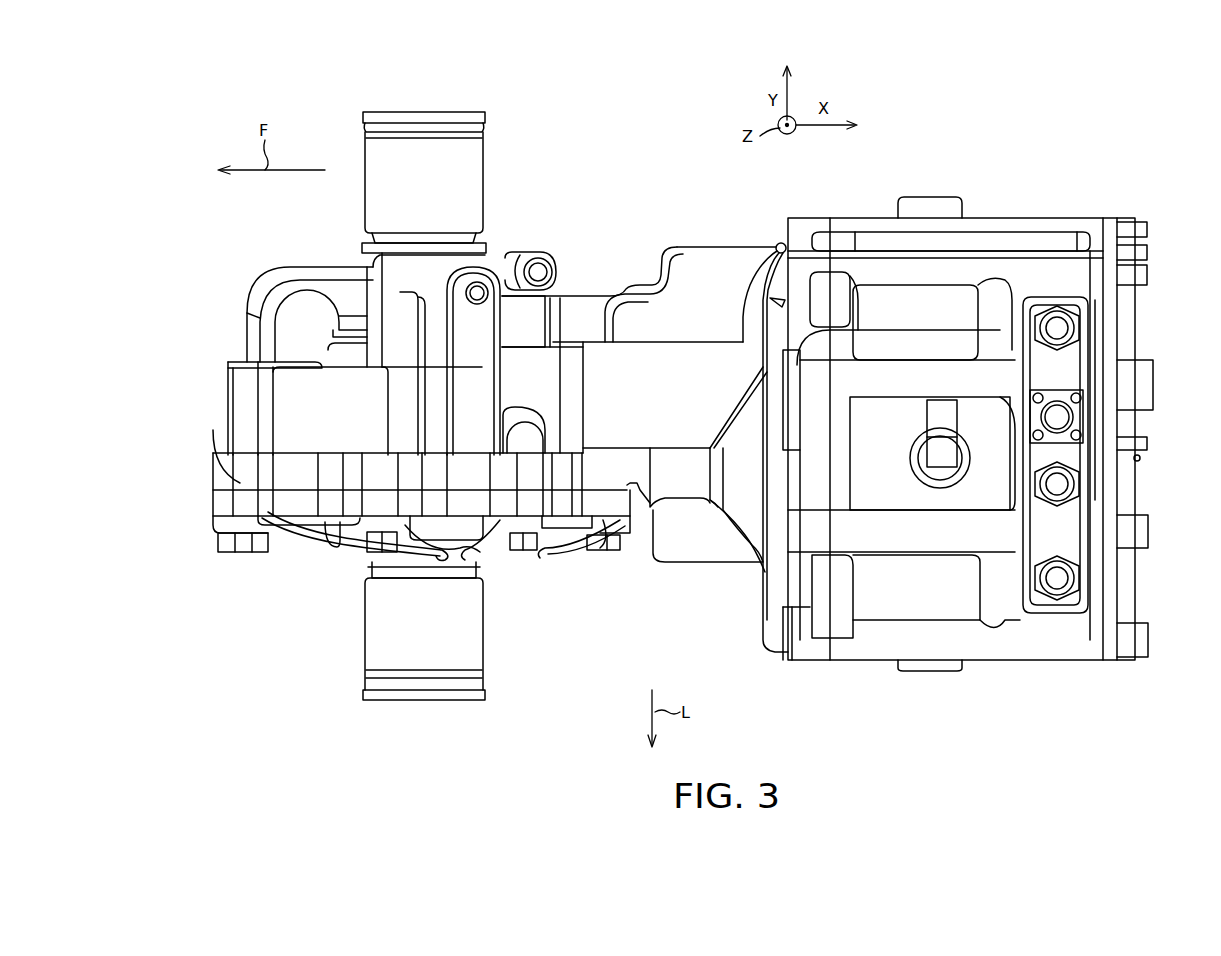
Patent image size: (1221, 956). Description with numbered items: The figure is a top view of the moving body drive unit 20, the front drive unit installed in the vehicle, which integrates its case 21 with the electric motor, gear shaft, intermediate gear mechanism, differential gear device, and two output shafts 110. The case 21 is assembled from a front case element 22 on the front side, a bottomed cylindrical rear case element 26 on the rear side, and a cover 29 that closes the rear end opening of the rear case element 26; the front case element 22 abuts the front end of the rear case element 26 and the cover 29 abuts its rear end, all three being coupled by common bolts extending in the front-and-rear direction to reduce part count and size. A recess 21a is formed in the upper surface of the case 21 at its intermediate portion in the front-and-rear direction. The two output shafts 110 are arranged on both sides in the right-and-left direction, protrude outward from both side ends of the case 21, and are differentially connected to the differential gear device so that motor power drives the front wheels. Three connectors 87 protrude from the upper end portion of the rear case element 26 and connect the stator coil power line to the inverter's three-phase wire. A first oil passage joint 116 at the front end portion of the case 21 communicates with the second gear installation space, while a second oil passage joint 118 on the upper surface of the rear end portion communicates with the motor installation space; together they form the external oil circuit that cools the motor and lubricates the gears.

The moving body drive unit 20 is at (985, 415).
The case 21 is at (709, 246).
The recess 21a is at (683, 423).
The front case element 22 is at (575, 292).
The rear case element 26 is at (1027, 218).
The cover 29 is at (1120, 218).
The connectors 87 is at (1078, 332).
The output shafts 110 is at (485, 167).
The first oil passage joint 116 is at (535, 258).
The second oil passage joint 118 is at (920, 410).